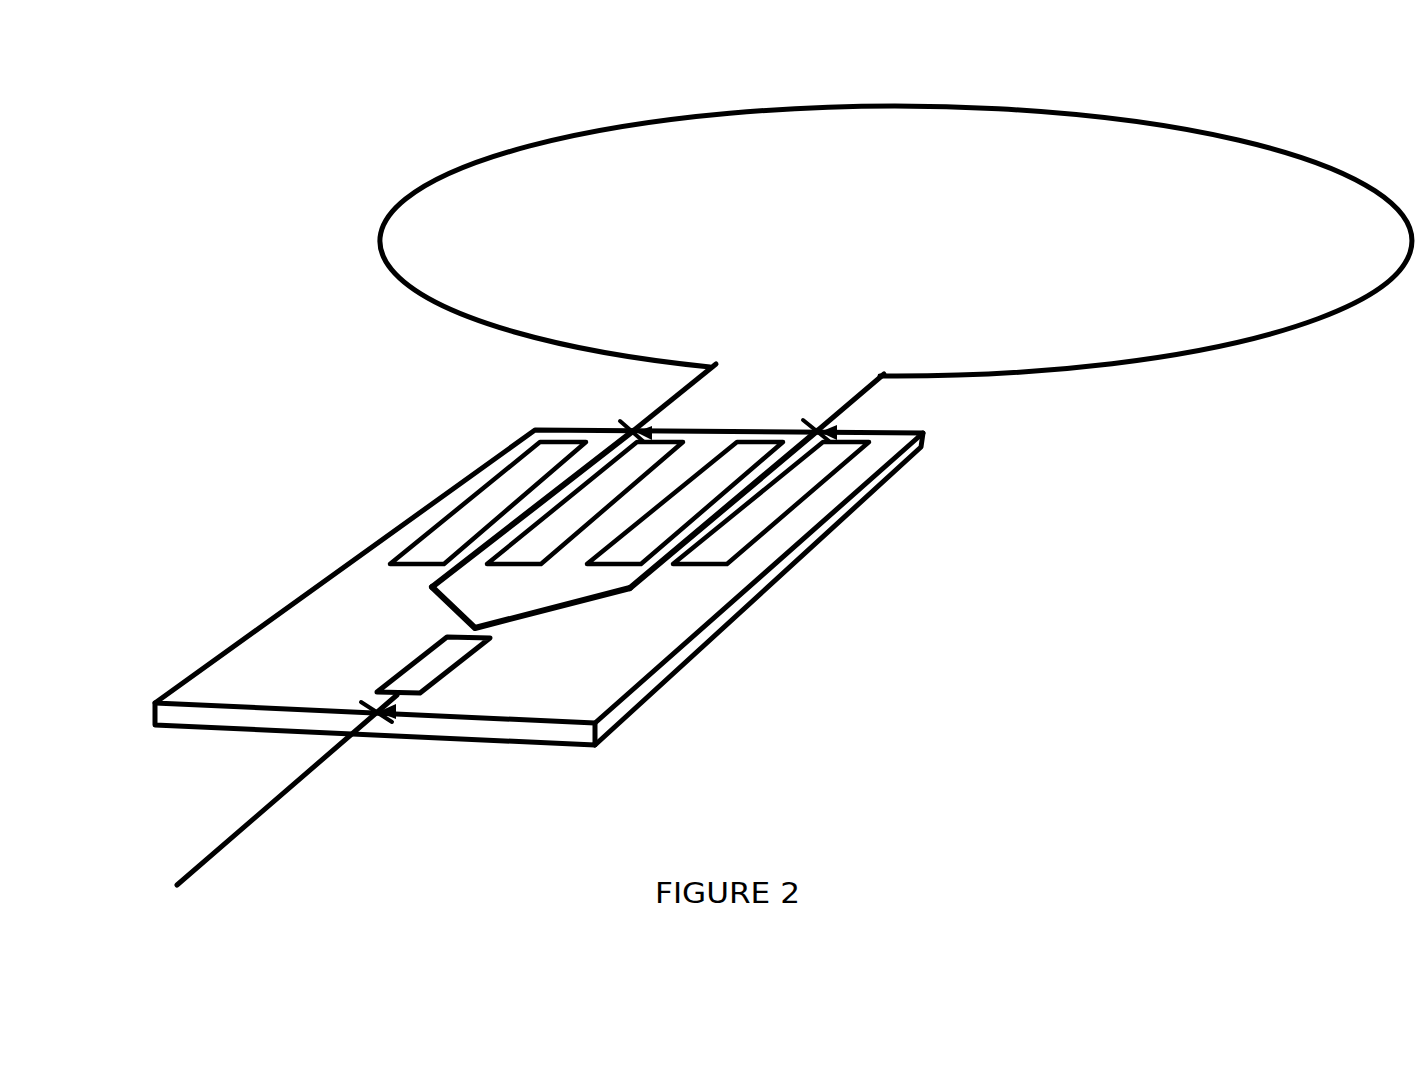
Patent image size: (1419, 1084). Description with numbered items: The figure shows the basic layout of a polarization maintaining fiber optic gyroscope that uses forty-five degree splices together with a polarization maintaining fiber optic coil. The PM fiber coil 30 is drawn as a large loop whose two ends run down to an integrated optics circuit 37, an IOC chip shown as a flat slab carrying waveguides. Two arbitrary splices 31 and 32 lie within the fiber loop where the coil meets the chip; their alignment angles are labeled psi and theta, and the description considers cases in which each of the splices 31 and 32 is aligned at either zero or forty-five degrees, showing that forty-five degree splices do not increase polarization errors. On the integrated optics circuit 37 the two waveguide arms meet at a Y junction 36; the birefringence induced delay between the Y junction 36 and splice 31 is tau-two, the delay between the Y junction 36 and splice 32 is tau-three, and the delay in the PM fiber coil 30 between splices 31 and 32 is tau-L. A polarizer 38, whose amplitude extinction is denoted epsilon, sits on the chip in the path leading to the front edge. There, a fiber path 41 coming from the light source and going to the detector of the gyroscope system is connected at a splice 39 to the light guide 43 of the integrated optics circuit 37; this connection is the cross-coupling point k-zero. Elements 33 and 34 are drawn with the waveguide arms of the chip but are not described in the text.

The PM fiber coil 30 is at (1133, 367).
The splice 31 is at (627, 428).
The splice 32 is at (827, 430).
The first waveguide arm 33 is at (460, 565).
The second waveguide arm 34 is at (648, 566).
The Y junction 36 is at (478, 626).
The integrated optics circuit 37 is at (700, 640).
The polarizer 38 is at (423, 672).
The splice 39 is at (385, 716).
The fiber path 41 is at (260, 808).
The light guide 43 is at (390, 708).